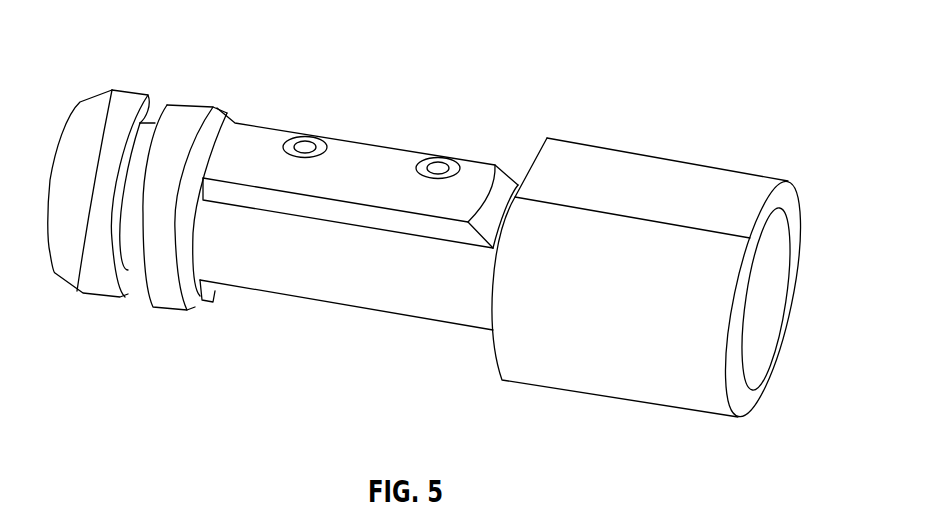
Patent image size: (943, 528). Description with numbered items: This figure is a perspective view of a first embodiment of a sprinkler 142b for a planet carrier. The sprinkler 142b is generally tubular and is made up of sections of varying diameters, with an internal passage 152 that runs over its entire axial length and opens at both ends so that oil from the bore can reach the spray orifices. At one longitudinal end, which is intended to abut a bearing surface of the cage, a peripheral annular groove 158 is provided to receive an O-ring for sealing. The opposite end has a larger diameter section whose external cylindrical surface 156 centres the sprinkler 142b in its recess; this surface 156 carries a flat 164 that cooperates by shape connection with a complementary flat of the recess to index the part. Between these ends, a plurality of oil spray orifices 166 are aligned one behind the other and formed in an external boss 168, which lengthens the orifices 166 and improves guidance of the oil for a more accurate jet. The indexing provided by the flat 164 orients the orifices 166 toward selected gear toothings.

The sprinkler 142b is at (762, 90).
The internal passage 152 is at (762, 280).
The external cylindrical surface 156 is at (190, 123).
The peripheral annular groove 158 is at (155, 117).
The flat 164 is at (652, 183).
The oil spray orifices 166 is at (438, 168).
The external boss 168 is at (377, 183).